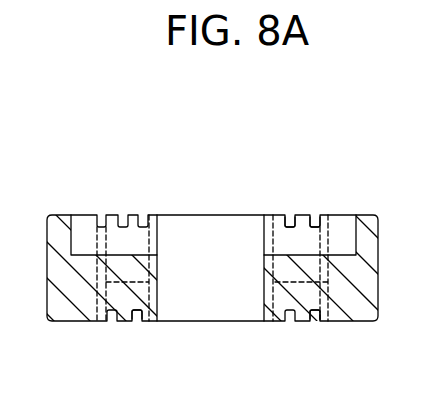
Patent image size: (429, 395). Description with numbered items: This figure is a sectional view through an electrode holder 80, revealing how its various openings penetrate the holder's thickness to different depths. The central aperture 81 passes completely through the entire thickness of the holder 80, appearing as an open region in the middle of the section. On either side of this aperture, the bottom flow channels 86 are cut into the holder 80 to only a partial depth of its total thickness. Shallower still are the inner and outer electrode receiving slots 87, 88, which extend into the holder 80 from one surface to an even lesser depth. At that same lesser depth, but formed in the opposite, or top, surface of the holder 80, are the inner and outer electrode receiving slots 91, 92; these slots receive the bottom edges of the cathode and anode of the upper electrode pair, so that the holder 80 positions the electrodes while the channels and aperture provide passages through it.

The holder 80 is at (137, 203).
The central aperture 81 is at (205, 227).
The bottom flow channels 86 is at (83, 230).
The inner electrode receiving slot 87 is at (291, 215).
The outer electrode receiving slot 88 is at (314, 222).
The inner electrode receiving slot 91 is at (137, 321).
The outer electrode receiving slot 92 is at (312, 321).